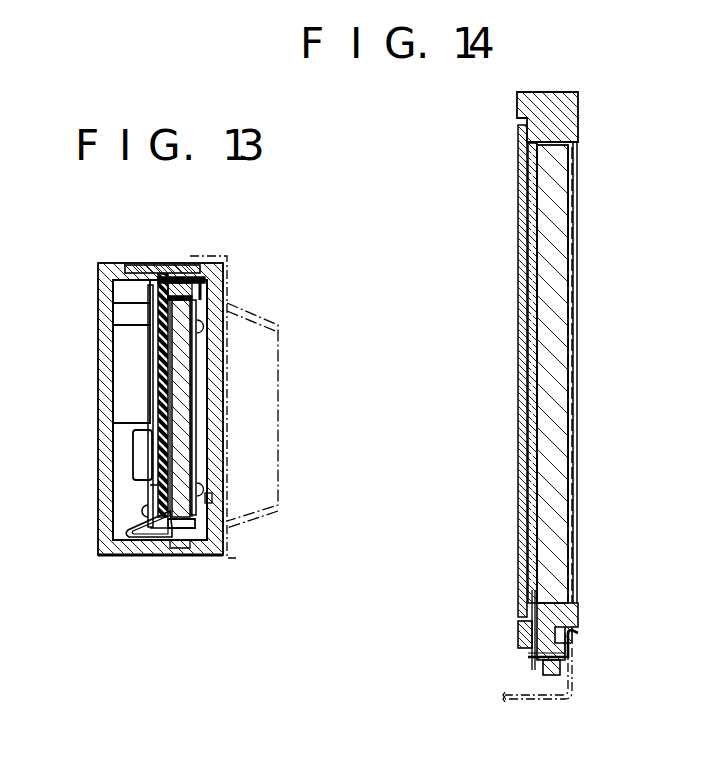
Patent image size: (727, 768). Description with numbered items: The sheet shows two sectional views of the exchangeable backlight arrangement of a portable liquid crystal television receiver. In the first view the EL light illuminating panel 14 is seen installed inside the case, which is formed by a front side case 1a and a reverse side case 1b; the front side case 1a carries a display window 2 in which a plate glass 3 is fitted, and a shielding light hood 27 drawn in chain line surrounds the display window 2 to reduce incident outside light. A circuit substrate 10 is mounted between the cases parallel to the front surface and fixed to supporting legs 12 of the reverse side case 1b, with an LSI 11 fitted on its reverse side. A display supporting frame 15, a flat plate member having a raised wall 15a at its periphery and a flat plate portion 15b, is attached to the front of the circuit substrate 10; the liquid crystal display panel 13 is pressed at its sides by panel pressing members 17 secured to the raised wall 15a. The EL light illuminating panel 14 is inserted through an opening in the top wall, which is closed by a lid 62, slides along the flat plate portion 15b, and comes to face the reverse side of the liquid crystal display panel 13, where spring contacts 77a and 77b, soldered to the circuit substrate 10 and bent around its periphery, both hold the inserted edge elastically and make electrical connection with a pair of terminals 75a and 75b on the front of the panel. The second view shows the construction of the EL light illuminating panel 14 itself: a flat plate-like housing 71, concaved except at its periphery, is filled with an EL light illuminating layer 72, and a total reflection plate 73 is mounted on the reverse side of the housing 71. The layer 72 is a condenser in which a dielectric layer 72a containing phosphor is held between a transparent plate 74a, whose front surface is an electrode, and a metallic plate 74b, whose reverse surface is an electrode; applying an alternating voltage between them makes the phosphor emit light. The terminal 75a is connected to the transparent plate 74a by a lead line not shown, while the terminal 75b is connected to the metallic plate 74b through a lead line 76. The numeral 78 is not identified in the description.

In FIG. 13, the front side case 1a is at (222, 290).
In FIG. 13, the reverse side case 1b is at (105, 382).
In FIG. 13, the display window 2 is at (220, 430).
In FIG. 13, the plate glass 3 is at (213, 463).
In FIG. 13, the circuit substrate 10 is at (120, 340).
In FIG. 13, the LSI 11 is at (140, 450).
In FIG. 13, the supporting leg 12 is at (114, 303).
In FIG. 13, the liquid crystal display panel 13 is at (190, 342).
In FIG. 13, the EL light illuminating panel 14 is at (150, 488).
In FIG. 14, the EL light illuminating panel 14 is at (590, 168).
In FIG. 13, the display supporting frame 15 is at (201, 278).
In FIG. 13, the raised wall 15a is at (168, 280).
In FIG. 13, the flat plate portion 15b is at (150, 398).
In FIG. 13, the panel pressing member 17 is at (196, 388).
In FIG. 13, the shielding light hood 27 is at (268, 512).
In FIG. 13, the lid 62 is at (133, 265).
In FIG. 14, the housing 71 is at (573, 92).
In FIG. 14, the EL light illuminating layer 72 is at (576, 286).
In FIG. 14, the dielectric layer 72a is at (566, 358).
In FIG. 14, the total reflection plate 73 is at (518, 292).
In FIG. 14, the transparent plate 74a is at (573, 212).
In FIG. 14, the metallic plate 74b is at (572, 456).
In FIG. 14, the terminal 75a is at (608, 672).
In FIG. 14, the terminal 75b is at (572, 645).
In FIG. 14, the lead line 76 is at (518, 639).
In FIG. 13, the spring contact 77a is at (63, 564).
In FIG. 14, the spring contact 77a is at (633, 731).
In FIG. 13, the spring contact 77b is at (128, 534).
In FIG. 14, the spring contact 77b is at (577, 702).
In FIG. 13, the roller 78 is at (146, 511).